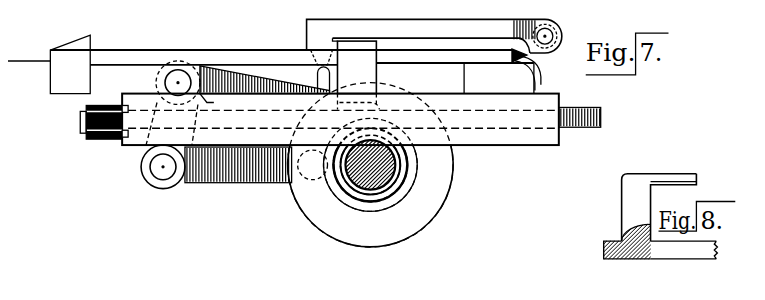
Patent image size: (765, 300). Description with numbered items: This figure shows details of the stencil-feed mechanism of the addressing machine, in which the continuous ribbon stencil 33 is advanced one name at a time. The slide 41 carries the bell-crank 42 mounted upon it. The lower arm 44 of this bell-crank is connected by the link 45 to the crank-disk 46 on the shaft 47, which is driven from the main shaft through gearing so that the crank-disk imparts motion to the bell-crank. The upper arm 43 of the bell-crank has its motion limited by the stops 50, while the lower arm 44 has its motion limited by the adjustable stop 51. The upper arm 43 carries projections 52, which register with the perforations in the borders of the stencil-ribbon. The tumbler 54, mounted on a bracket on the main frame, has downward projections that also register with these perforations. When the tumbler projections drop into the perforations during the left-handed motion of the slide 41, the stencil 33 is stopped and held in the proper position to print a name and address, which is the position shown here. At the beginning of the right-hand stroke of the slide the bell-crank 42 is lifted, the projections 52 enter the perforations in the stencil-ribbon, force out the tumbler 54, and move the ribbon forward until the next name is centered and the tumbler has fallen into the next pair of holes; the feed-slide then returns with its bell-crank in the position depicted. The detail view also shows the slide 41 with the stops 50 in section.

In FIG. 7, the stencil 33 is at (22, 59).
In FIG. 7, the slide 41 is at (590, 126).
In FIG. 8, the slide 41 is at (664, 264).
In FIG. 7, the bell-crank 42 is at (160, 73).
In FIG. 7, the upper arm 43 is at (218, 63).
In FIG. 7, the lower arm 44 is at (145, 152).
In FIG. 7, the link 45 is at (237, 183).
In FIG. 7, the crank-disk 46 is at (371, 165).
In FIG. 7, the shaft 47 is at (372, 186).
In FIG. 7, the stops 50 is at (355, 65).
In FIG. 8, the stops 50 is at (674, 172).
In FIG. 7, the adjustable stop 51 is at (83, 135).
In FIG. 7, the projections 52 is at (318, 73).
In FIG. 7, the tumbler 54 is at (307, 30).